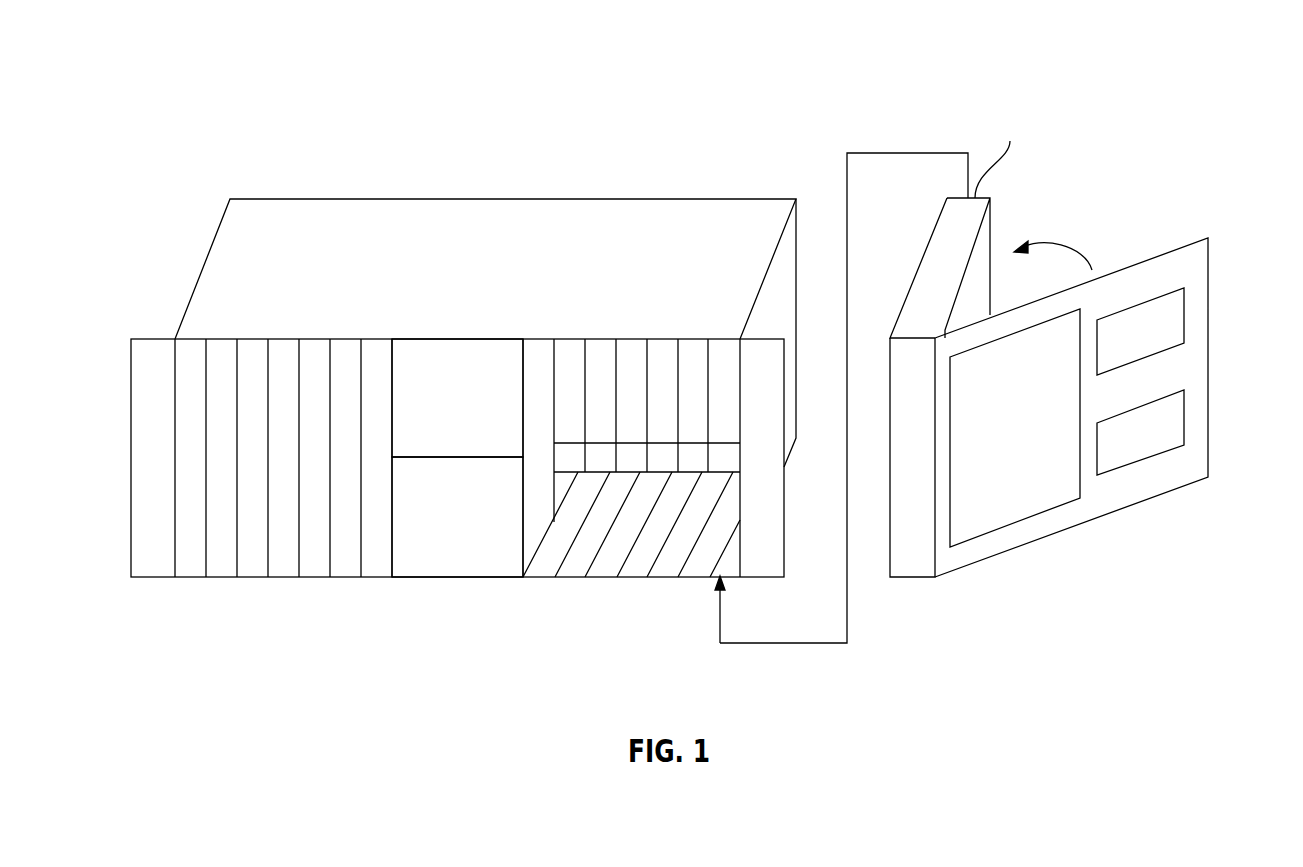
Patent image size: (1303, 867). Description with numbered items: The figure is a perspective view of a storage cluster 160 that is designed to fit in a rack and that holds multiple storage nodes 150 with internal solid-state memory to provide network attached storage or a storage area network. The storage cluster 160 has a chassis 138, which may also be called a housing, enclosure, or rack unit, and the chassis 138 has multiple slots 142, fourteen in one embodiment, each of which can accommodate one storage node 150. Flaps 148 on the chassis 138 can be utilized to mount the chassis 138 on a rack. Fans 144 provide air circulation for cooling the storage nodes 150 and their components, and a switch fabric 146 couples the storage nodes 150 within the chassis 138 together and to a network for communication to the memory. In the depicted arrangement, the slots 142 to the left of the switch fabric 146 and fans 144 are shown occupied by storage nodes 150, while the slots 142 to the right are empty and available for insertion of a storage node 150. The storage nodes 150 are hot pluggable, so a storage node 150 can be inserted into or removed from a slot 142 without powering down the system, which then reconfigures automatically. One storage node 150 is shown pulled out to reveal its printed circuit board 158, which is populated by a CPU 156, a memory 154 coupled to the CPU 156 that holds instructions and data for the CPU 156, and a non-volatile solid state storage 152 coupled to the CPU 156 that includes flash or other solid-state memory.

The storage cluster 160 is at (144, 86).
The chassis 138 is at (305, 199).
The flaps 148 is at (131, 455).
The storage node 150 is at (190, 577).
The switch fabric 146 is at (465, 339).
The fans 144 is at (457, 577).
The slots 142 is at (702, 577).
The printed circuit board 158 is at (1208, 265).
The non-volatile solid state storage 152 is at (1013, 525).
The memory 154 is at (1140, 302).
The CPU 156 is at (1186, 417).